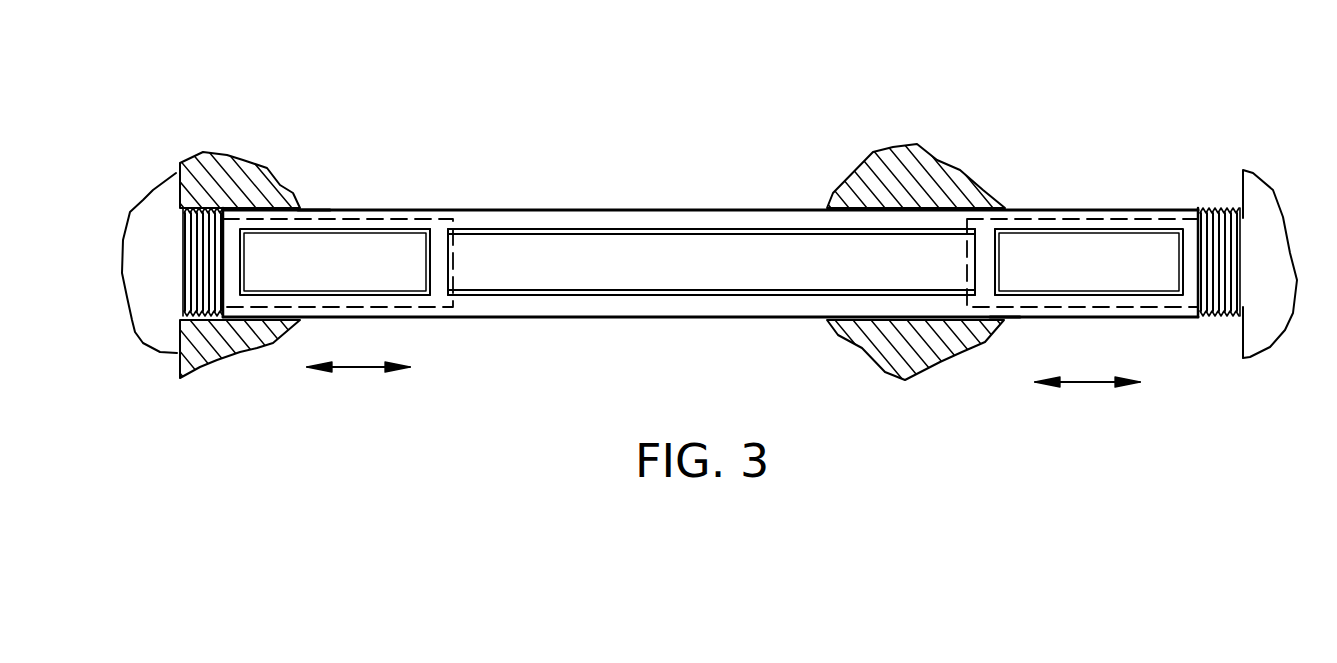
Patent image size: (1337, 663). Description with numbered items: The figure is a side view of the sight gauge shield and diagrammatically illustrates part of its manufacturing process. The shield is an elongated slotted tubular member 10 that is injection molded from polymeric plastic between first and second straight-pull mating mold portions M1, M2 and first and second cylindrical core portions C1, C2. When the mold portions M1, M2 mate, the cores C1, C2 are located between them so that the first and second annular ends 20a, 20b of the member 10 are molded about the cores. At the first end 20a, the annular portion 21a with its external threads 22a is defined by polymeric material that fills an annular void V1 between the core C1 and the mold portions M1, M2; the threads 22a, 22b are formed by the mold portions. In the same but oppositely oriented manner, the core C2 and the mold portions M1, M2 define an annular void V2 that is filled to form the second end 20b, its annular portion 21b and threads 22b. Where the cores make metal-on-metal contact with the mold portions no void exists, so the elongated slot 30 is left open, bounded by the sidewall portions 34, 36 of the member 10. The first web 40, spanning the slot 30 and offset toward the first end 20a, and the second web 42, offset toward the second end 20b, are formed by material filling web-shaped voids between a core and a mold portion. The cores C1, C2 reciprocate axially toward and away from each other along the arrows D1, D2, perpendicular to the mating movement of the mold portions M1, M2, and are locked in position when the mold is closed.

The slotted tubular member 10 is at (770, 156).
The first end 20a is at (190, 284).
The second end 20b is at (1222, 205).
The first annular portion 21a is at (233, 269).
The second annular portion 21b is at (1190, 252).
The first external threads 22a is at (198, 236).
The second external threads 22b is at (1222, 318).
The first elongated slot 30 is at (724, 238).
The first sidewall portion 34 is at (630, 311).
The second sidewall portion 36 is at (603, 213).
The first web 40 is at (443, 253).
The second web 42 is at (983, 253).
The first core portion C1 is at (376, 243).
The second core portion C2 is at (1063, 245).
The first mold portion M1 is at (248, 178).
The second mold portion M2 is at (215, 356).
The first annular void V1 is at (318, 205).
The second annular void V2 is at (1006, 321).
The first core movement direction D1 is at (347, 367).
The second core movement direction D2 is at (1077, 382).